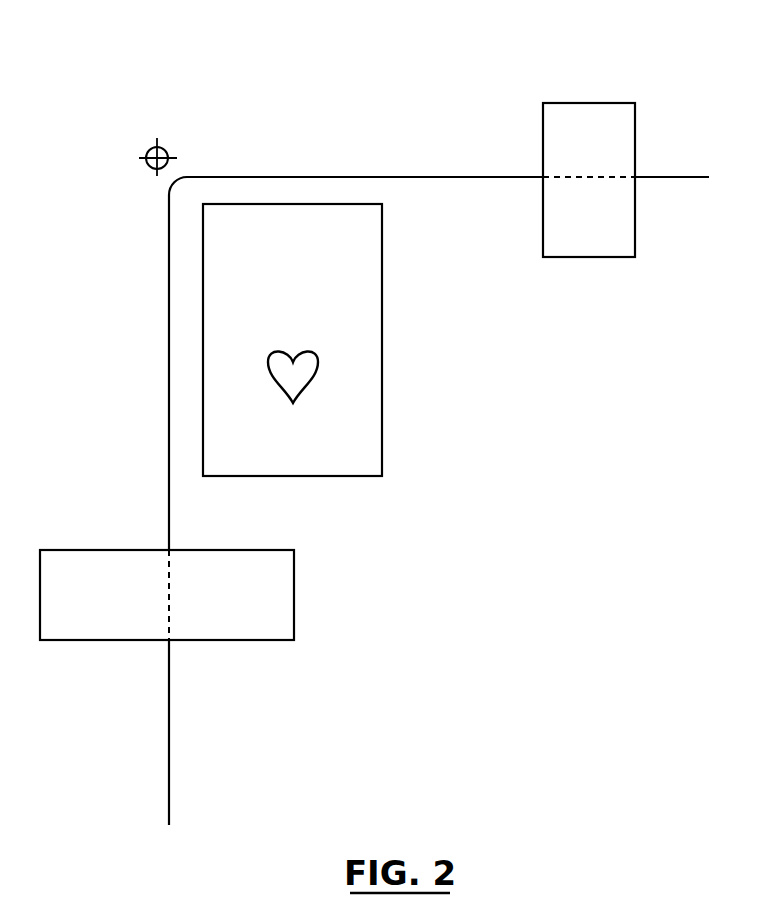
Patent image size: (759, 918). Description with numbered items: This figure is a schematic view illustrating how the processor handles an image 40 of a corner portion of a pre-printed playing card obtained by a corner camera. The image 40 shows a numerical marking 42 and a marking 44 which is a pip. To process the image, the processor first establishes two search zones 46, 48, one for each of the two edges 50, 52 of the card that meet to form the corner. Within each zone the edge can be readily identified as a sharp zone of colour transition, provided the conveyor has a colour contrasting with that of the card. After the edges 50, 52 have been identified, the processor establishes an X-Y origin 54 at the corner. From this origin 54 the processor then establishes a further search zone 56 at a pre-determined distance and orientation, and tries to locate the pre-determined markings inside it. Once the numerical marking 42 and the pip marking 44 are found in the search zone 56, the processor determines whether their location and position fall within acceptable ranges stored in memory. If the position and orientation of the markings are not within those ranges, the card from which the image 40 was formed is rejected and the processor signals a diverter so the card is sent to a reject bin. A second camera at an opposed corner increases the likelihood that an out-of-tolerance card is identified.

The image 40 is at (482, 650).
The numerical marking 42 is at (323, 283).
The marking 44 is at (323, 360).
The search zone 46 is at (593, 88).
The search zone 48 is at (128, 530).
The edge 50 is at (380, 176).
The edge 52 is at (168, 388).
The X-Y origin 54 is at (137, 148).
The search zone 56 is at (264, 197).